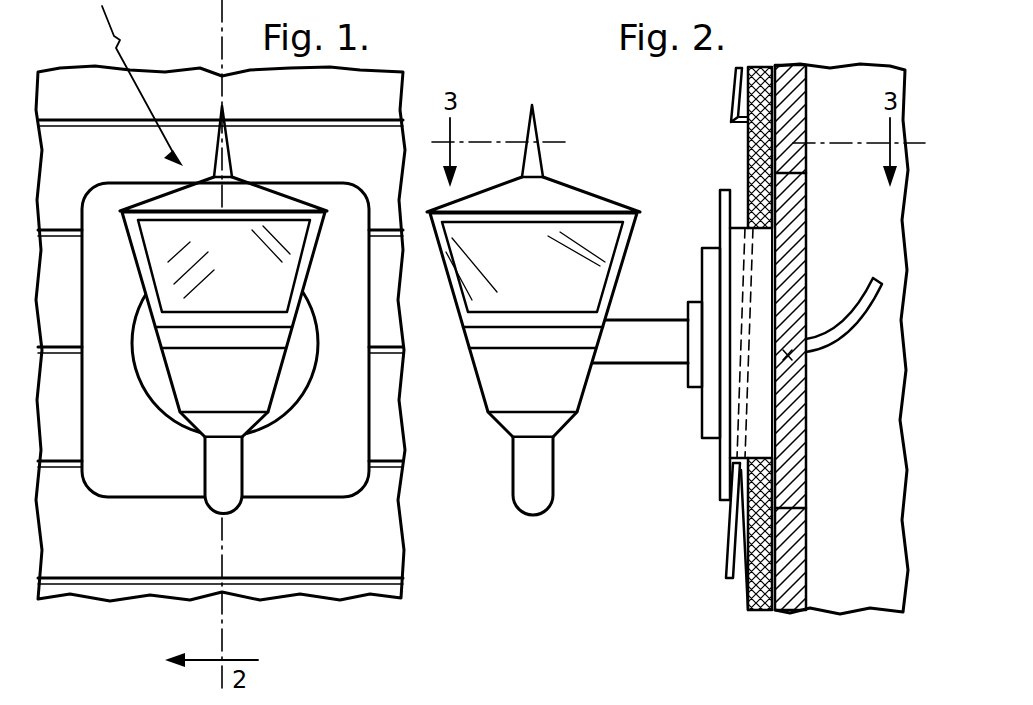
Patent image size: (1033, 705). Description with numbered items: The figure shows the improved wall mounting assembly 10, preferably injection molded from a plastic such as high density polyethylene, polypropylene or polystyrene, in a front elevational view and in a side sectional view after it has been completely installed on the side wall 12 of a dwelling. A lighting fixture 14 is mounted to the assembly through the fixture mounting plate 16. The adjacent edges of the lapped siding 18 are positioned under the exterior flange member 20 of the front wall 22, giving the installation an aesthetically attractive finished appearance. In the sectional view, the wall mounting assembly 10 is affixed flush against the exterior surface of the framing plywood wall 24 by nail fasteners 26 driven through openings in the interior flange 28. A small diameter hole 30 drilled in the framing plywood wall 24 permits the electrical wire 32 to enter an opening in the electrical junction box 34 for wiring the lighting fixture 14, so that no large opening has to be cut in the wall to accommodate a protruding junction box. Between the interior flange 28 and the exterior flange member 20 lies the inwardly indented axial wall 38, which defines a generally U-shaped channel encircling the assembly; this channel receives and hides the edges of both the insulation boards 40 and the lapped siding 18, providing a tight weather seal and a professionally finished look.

In FIG. 2, the wall mounting assembly 10 is at (578, 329).
In FIG. 1, the side wall 12 is at (415, 531).
In FIG. 1, the lighting fixture 14 is at (188, 334).
In FIG. 2, the lighting fixture 14 is at (572, 329).
In FIG. 1, the fixture mounting plate 16 is at (146, 388).
In FIG. 2, the fixture mounting plate 16 is at (702, 418).
In FIG. 1, the lapped siding 18 is at (100, 146).
In FIG. 2, the lapped siding 18 is at (713, 367).
In FIG. 1, the exterior flange member 20 is at (258, 482).
In FIG. 2, the exterior flange member 20 is at (717, 490).
In FIG. 1, the front wall 22 is at (342, 192).
In FIG. 2, the front wall 22 is at (718, 212).
In FIG. 2, the framing plywood wall 24 is at (788, 610).
In FIG. 2, the nail fasteners 26 is at (783, 180).
In FIG. 2, the interior flange 28 is at (773, 482).
In FIG. 2, the small diameter hole 30 is at (798, 370).
In FIG. 2, the electrical wire 32 is at (863, 322).
In FIG. 2, the electrical junction box 34 is at (757, 427).
In FIG. 2, the inwardly indented axial wall 38 is at (760, 258).
In FIG. 2, the insulation boards 40 is at (756, 612).